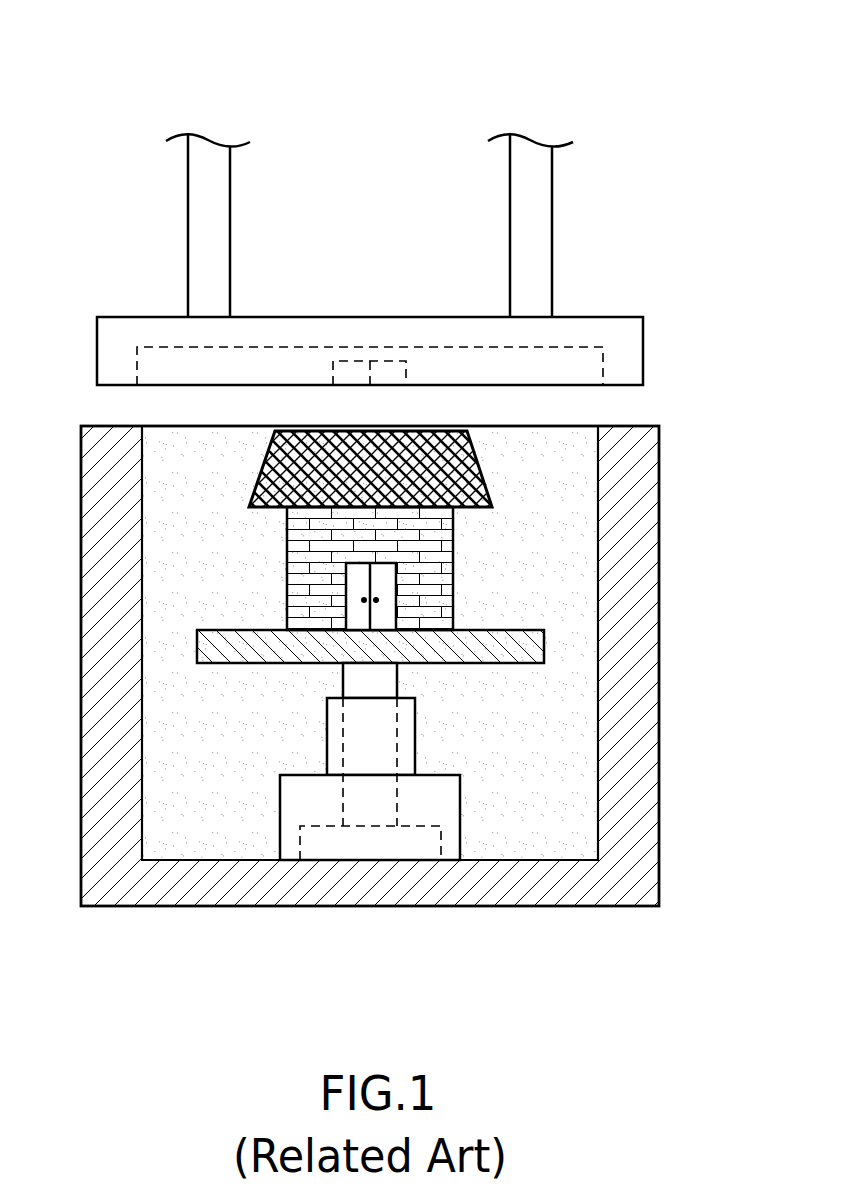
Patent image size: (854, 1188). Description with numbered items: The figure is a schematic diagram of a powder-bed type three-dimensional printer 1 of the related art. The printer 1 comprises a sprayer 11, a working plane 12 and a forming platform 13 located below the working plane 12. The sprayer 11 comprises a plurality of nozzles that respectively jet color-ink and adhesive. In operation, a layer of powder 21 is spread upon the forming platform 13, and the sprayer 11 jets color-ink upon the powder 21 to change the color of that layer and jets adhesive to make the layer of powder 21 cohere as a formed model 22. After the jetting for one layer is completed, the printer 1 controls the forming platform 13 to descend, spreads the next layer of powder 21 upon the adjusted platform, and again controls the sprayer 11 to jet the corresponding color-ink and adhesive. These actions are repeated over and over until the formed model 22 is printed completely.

The 3D printer 1 is at (364, 37).
The sprayer 11 is at (372, 322).
The working plane 12 is at (622, 425).
The forming platform 13 is at (527, 649).
The powder 21 is at (564, 478).
The formed model 22 is at (443, 567).